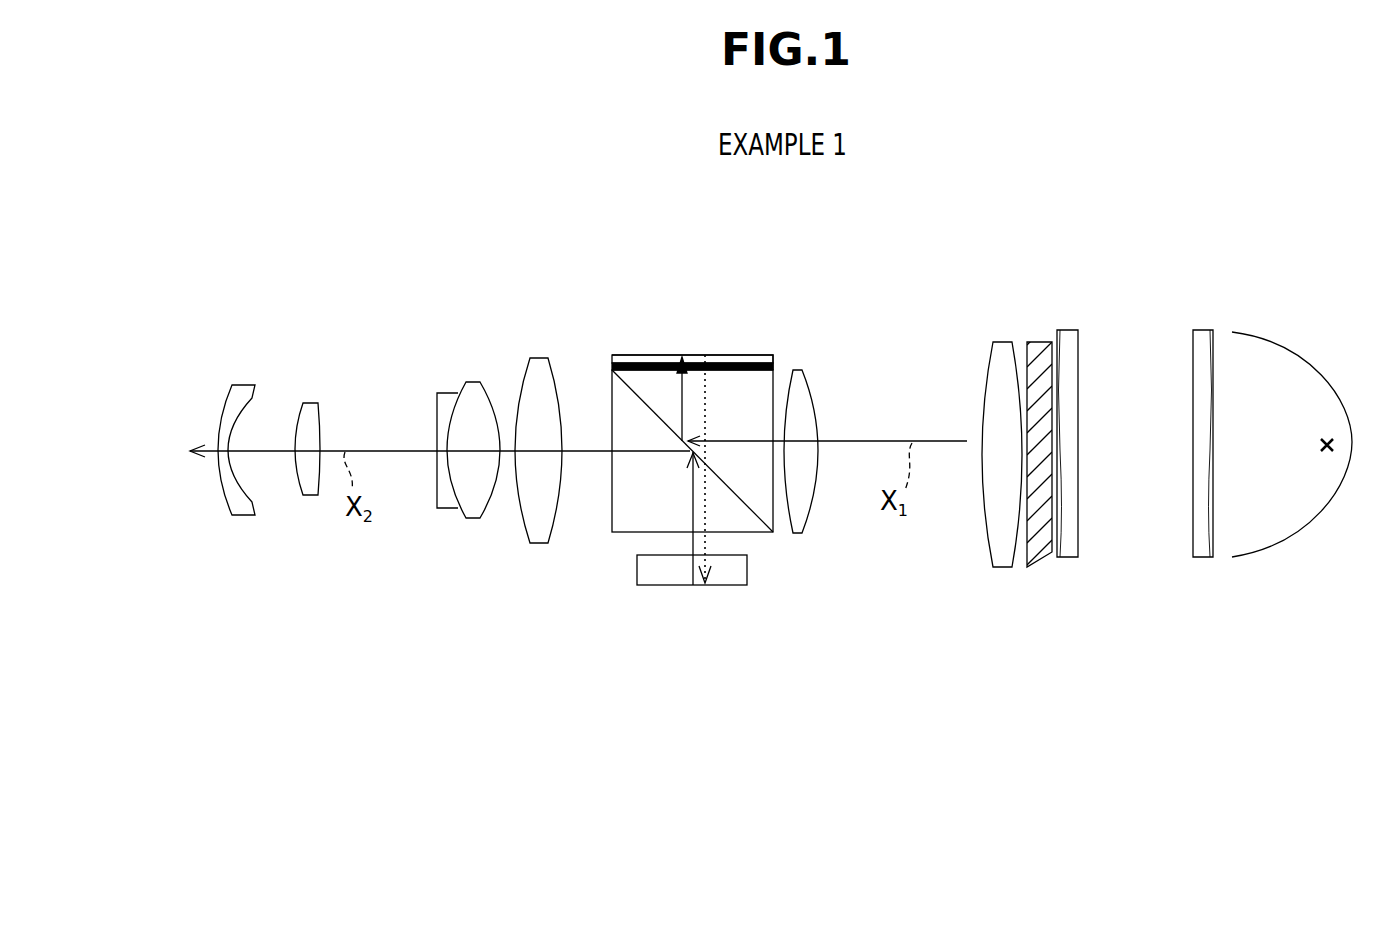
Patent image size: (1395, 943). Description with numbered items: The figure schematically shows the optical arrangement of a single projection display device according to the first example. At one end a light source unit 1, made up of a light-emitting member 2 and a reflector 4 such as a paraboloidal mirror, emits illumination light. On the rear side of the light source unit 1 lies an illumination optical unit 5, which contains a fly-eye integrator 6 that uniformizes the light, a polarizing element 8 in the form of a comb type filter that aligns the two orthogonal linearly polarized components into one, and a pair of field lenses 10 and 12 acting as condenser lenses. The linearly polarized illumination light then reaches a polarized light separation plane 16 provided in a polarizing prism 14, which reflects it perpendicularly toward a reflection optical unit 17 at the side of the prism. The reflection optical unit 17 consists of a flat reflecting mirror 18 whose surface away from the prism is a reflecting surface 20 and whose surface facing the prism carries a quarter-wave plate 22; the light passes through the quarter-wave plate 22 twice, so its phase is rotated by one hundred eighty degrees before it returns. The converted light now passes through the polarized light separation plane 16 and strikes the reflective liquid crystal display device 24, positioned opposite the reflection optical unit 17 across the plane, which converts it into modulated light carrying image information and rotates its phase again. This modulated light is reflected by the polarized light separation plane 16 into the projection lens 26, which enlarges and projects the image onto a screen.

The light source unit 1 is at (1306, 553).
The light-emitting member 2 is at (1325, 437).
The reflector 4 is at (1265, 338).
The illumination optical unit 5 is at (780, 582).
The fly-eye integrator 6 is at (1220, 318).
The polarizing element 8 is at (1043, 345).
The field lens 10 is at (1003, 345).
The field lens 12 is at (800, 397).
The polarizing prism 14 is at (622, 520).
The polarized light separation plane 16 is at (742, 513).
The reflection optical unit 17 is at (609, 352).
The flat reflecting mirror 18 is at (720, 355).
The reflecting surface 20 is at (637, 355).
The quarter-wave plate 22 is at (777, 360).
The reflective liquid crystal display device 24 is at (725, 578).
The projection lens 26 is at (575, 320).